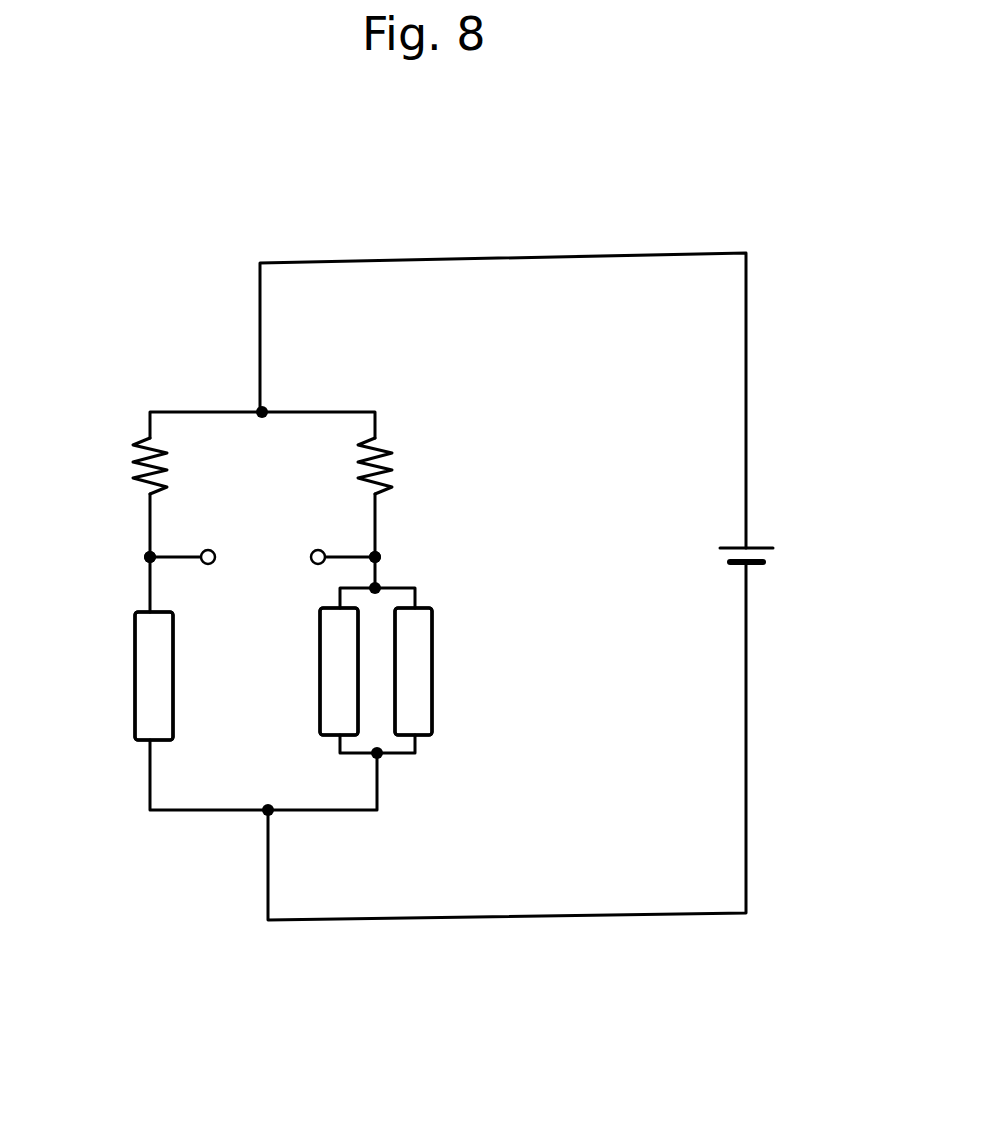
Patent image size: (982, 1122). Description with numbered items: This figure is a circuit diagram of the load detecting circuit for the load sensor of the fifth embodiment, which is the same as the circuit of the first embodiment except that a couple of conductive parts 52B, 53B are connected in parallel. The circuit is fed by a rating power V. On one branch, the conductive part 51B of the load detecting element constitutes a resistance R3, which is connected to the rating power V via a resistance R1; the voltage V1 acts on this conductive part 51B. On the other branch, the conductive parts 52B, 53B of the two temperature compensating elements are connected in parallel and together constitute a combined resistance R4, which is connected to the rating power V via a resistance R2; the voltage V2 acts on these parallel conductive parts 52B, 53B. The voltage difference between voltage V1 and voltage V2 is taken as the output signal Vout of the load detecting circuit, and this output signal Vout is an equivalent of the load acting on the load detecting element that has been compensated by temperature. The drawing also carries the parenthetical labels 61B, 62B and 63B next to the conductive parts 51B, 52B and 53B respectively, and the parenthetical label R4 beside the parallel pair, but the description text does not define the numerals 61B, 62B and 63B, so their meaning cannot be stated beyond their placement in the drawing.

The conductive part 51B is at (155, 676).
The first strain gauge resistor (alternative embodiment) 61B is at (97, 676).
The conductive part 52B is at (340, 648).
The second strain gauge resistor (alternative embodiment) 62B is at (435, 671).
The conductive part 53B is at (417, 692).
The third strain gauge resistor (alternative embodiment) 63B is at (472, 718).
The resistance R1 is at (179, 466).
The resistance R2 is at (403, 466).
The resistance R3 is at (181, 676).
The combined resistance R4 is at (552, 830).
The voltage V1 is at (148, 555).
The voltage V2 is at (383, 550).
The output signal Vout is at (263, 555).
The rating power V is at (764, 572).